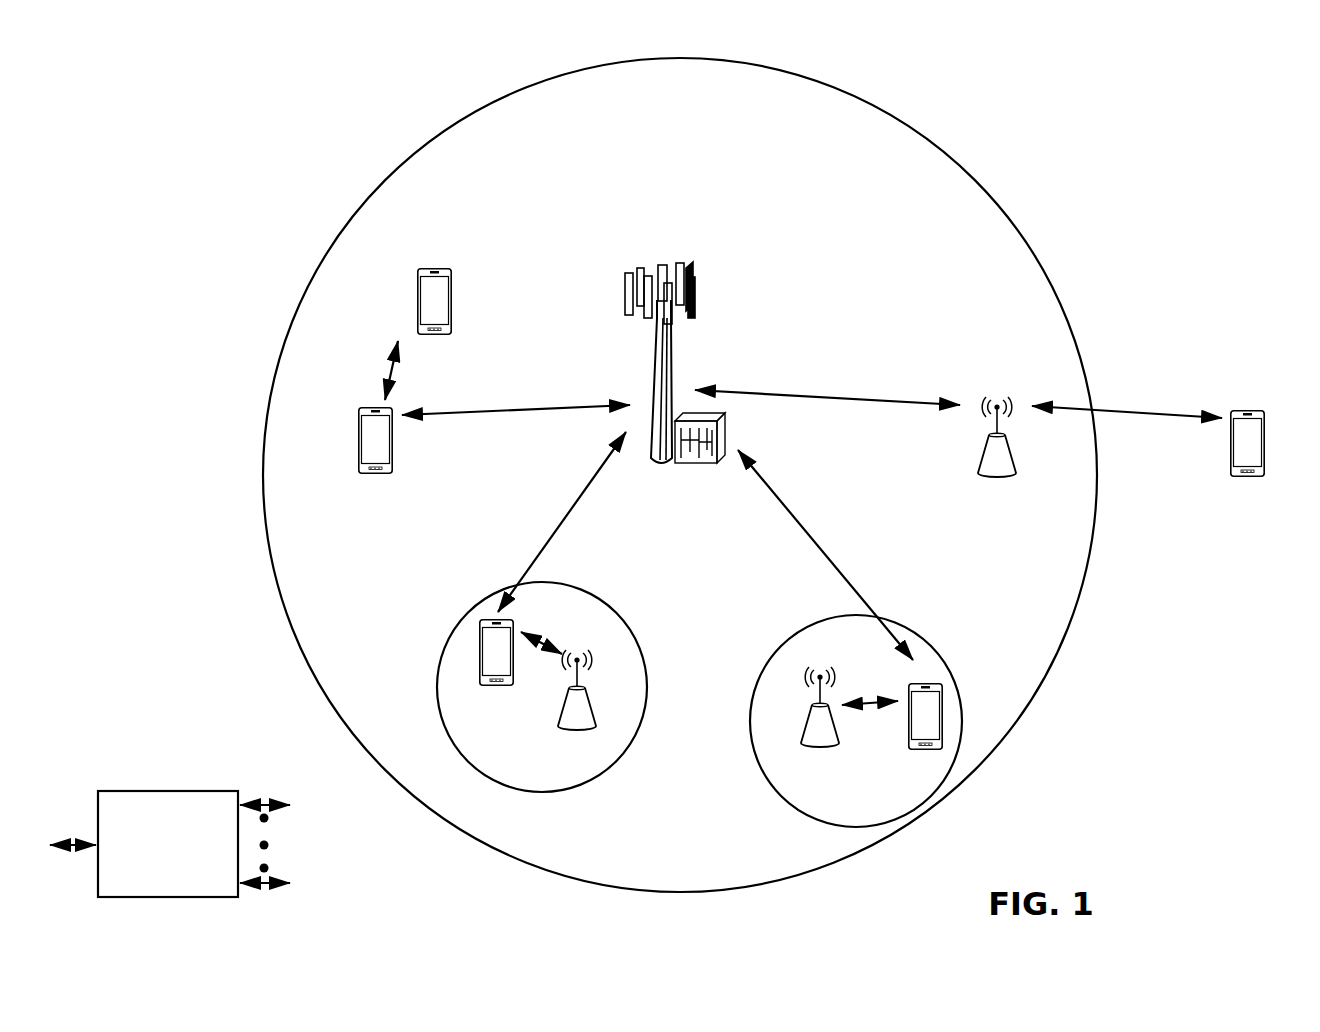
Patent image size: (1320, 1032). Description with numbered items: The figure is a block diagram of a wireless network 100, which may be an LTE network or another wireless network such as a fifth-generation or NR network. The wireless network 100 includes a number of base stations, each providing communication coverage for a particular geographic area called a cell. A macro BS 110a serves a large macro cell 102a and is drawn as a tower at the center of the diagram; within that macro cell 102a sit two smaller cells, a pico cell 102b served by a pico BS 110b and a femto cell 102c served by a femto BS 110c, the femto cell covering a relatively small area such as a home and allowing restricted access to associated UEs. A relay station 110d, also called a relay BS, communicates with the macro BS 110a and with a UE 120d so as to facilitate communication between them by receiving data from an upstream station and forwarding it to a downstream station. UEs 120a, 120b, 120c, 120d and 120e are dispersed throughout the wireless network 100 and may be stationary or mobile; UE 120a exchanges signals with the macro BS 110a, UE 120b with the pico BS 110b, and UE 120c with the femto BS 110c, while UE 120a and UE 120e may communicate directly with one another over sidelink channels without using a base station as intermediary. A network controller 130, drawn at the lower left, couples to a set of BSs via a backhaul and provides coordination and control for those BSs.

The wireless network 100 is at (150, 52).
The macro cell 102a is at (960, 162).
The pico cell 102b is at (632, 627).
The femto cell 102c is at (795, 640).
The macro BS 110a is at (672, 262).
The pico BS 110b is at (597, 722).
The femto BS 110c is at (805, 736).
The relay station 110d is at (997, 400).
The UE 120a is at (358, 437).
The UE 120b is at (485, 688).
The UE 120c is at (910, 751).
The UE 120d is at (1263, 410).
The UE 120e is at (417, 290).
The network controller 130 is at (167, 790).